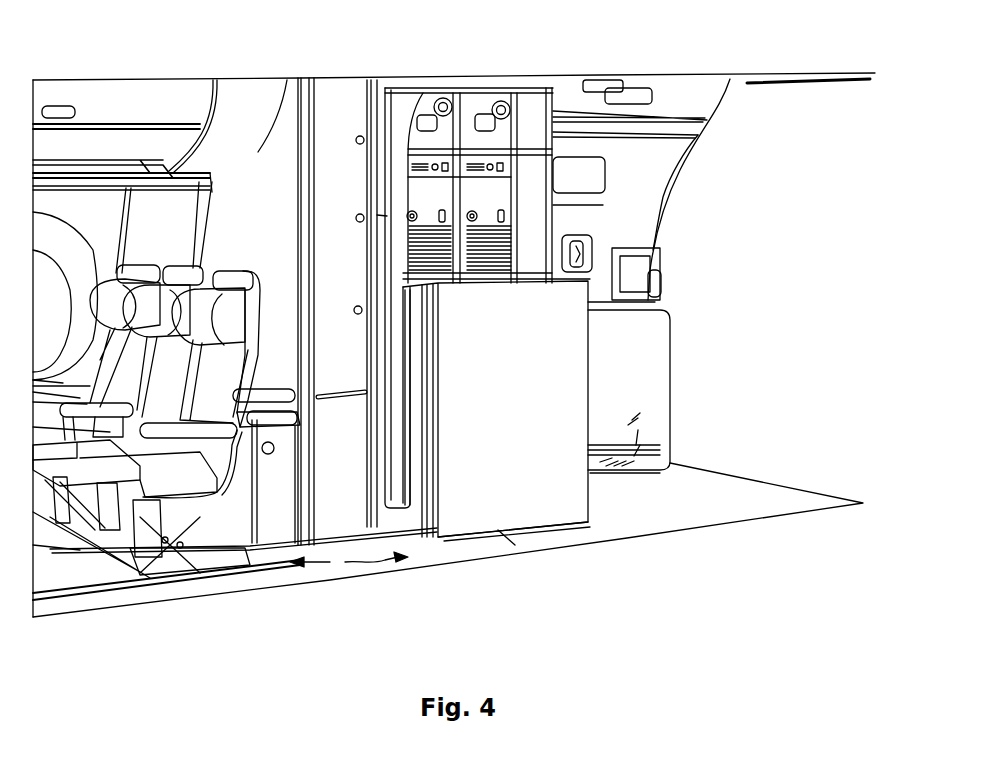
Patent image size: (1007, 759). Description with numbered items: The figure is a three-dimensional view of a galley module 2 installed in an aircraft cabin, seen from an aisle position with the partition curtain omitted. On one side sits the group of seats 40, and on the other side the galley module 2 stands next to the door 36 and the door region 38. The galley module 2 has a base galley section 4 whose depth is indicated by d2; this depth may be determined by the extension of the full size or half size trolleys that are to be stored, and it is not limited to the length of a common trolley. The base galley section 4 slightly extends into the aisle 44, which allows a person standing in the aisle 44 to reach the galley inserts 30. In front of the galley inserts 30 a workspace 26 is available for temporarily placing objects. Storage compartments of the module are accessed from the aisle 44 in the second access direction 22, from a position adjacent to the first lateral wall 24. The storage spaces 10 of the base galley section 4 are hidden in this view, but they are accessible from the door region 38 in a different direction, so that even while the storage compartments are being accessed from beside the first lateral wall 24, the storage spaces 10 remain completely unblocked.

The galley module 2 is at (507, 545).
The base galley section 4 is at (412, 397).
The storage spaces 10 is at (596, 500).
The second access direction 22 is at (437, 255).
The first lateral wall 24 is at (529, 413).
The workspace 26 is at (541, 258).
The galley inserts 30 is at (444, 205).
The door 36 is at (637, 257).
The door region 38 is at (751, 500).
The group of seats 40 is at (138, 240).
The aisle 44 is at (349, 565).
The depth of the base galley section d2 is at (521, 541).